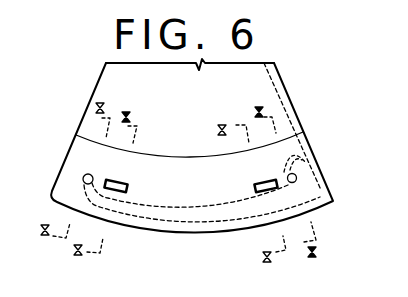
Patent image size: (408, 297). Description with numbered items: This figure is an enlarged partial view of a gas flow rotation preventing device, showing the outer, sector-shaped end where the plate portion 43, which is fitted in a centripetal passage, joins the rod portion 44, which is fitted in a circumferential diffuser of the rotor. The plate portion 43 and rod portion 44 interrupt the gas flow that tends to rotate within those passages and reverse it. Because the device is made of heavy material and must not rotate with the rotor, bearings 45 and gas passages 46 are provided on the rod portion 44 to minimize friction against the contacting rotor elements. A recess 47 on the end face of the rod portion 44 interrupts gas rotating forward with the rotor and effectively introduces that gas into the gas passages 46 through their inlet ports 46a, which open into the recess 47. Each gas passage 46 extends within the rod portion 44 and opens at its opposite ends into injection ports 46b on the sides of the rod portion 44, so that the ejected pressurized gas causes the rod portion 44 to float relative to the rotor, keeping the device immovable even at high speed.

The plate portion 43 is at (110, 96).
The rod portion 44 is at (89, 157).
The bearing 45 is at (122, 192).
The gas passage 46 is at (198, 224).
The inlet port 46a is at (313, 143).
The injection port 46b is at (83, 177).
The recess 47 is at (291, 100).